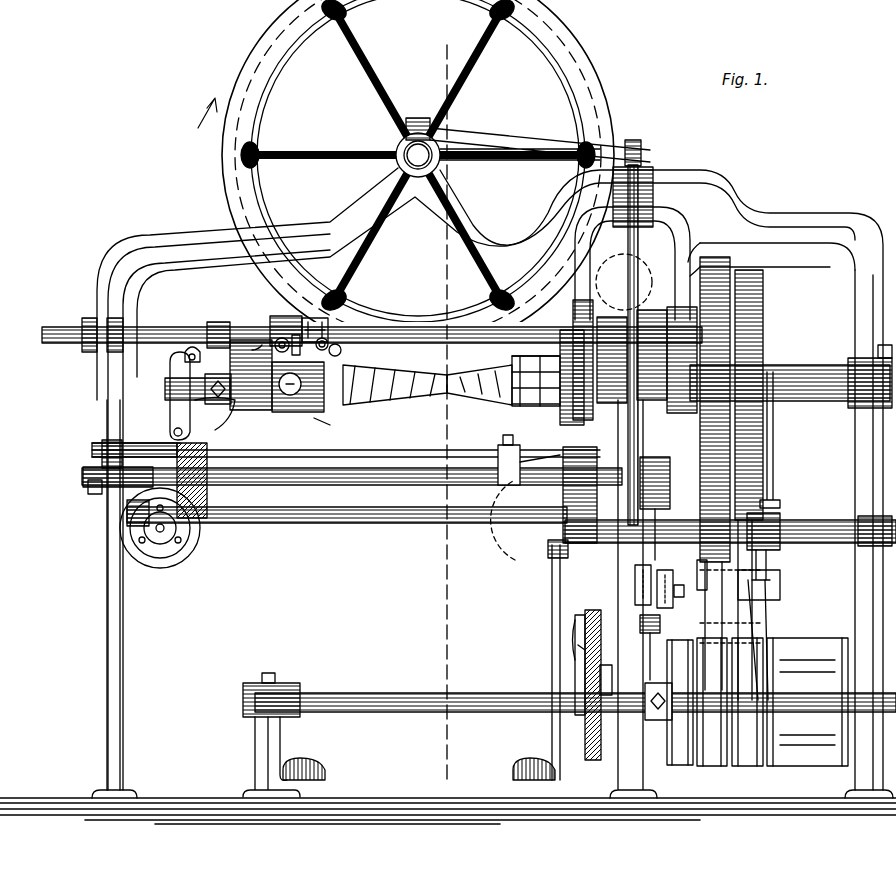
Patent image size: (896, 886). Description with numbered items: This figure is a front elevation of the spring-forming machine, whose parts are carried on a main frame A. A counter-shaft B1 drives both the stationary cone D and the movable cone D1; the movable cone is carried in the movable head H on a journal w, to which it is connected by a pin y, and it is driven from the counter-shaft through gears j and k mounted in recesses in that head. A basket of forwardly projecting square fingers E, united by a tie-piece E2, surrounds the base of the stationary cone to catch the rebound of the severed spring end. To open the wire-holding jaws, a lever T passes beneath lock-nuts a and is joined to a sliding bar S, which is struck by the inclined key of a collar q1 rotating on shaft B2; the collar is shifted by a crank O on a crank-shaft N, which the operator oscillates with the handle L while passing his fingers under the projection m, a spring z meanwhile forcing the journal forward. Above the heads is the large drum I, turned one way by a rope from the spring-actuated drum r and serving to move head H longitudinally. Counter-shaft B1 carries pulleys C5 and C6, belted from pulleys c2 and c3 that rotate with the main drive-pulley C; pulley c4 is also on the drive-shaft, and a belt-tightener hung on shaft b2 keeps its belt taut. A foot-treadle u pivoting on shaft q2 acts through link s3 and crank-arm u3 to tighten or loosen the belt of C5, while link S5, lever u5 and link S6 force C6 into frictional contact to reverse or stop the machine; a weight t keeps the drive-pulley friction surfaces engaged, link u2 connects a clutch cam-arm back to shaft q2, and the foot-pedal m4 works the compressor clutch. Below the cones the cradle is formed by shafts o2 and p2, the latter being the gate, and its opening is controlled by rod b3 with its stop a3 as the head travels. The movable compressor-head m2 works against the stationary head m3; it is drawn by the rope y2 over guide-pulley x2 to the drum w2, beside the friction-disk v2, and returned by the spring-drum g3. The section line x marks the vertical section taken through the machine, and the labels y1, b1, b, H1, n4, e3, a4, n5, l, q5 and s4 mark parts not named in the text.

The main frame A is at (487, 483).
The drum or pulley I is at (255, 100).
The section line x x is at (450, 414).
The shaft B2 is at (60, 318).
The counter-shaft B1 is at (791, 369).
The handle L is at (275, 318).
The collar q1 is at (305, 322).
The pin y1 is at (318, 340).
The stud b1 is at (300, 348).
The arm b is at (345, 320).
The crank O is at (342, 352).
The crank-shaft N is at (251, 375).
The link s3 is at (263, 347).
The projection m is at (270, 384).
The sliding bar S is at (195, 355).
The lever T is at (178, 400).
The movable head H is at (222, 410).
The drum H1 is at (280, 412).
The pin y is at (305, 425).
The movable cone D1 is at (420, 392).
The stationary cone D is at (479, 386).
The tie-piece E2 is at (512, 362).
The fingers E is at (556, 420).
The rod b3 is at (360, 440).
The shaft n4 is at (275, 484).
The collar e3 is at (210, 478).
The shaft p2 is at (370, 522).
The bearing a4 is at (177, 482).
The stop a3 is at (500, 448).
The rod n5 is at (540, 457).
The shaft o2 is at (20, 480).
The movable compressor-head m2 is at (200, 524).
The spring-drum g3 is at (170, 560).
The wheel l is at (578, 422).
The gear j is at (600, 425).
The gear k is at (615, 418).
The vertical shaft q5 is at (600, 247).
The spring-actuated drum r is at (624, 282).
The pulley C5 is at (728, 252).
The pulley C6 is at (755, 268).
The link S6 is at (775, 433).
The stationary compressor-head m3 is at (544, 511).
The crank-arm u3 is at (560, 660).
The link u2 is at (665, 552).
The lock-nuts a is at (704, 566).
The journal w is at (643, 585).
The weight t is at (670, 591).
The spring z is at (665, 604).
The collar s4 is at (690, 632).
The shaft b2 is at (805, 530).
The lever u5 is at (770, 565).
The link S5 is at (768, 596).
The shaft q2 is at (335, 700).
The foot-pedal m4 is at (320, 770).
The foot-treadle u is at (534, 759).
The pulley c4 is at (672, 766).
The pulley c2 is at (712, 768).
The pulley c3 is at (745, 768).
The main drive-pulley C is at (775, 768).
The flexible connection or rope y2 is at (592, 760).
The guide-pulley x2 is at (609, 680).
The drum or grooved pulley w2 is at (572, 630).
The friction-disk v2 is at (573, 638).